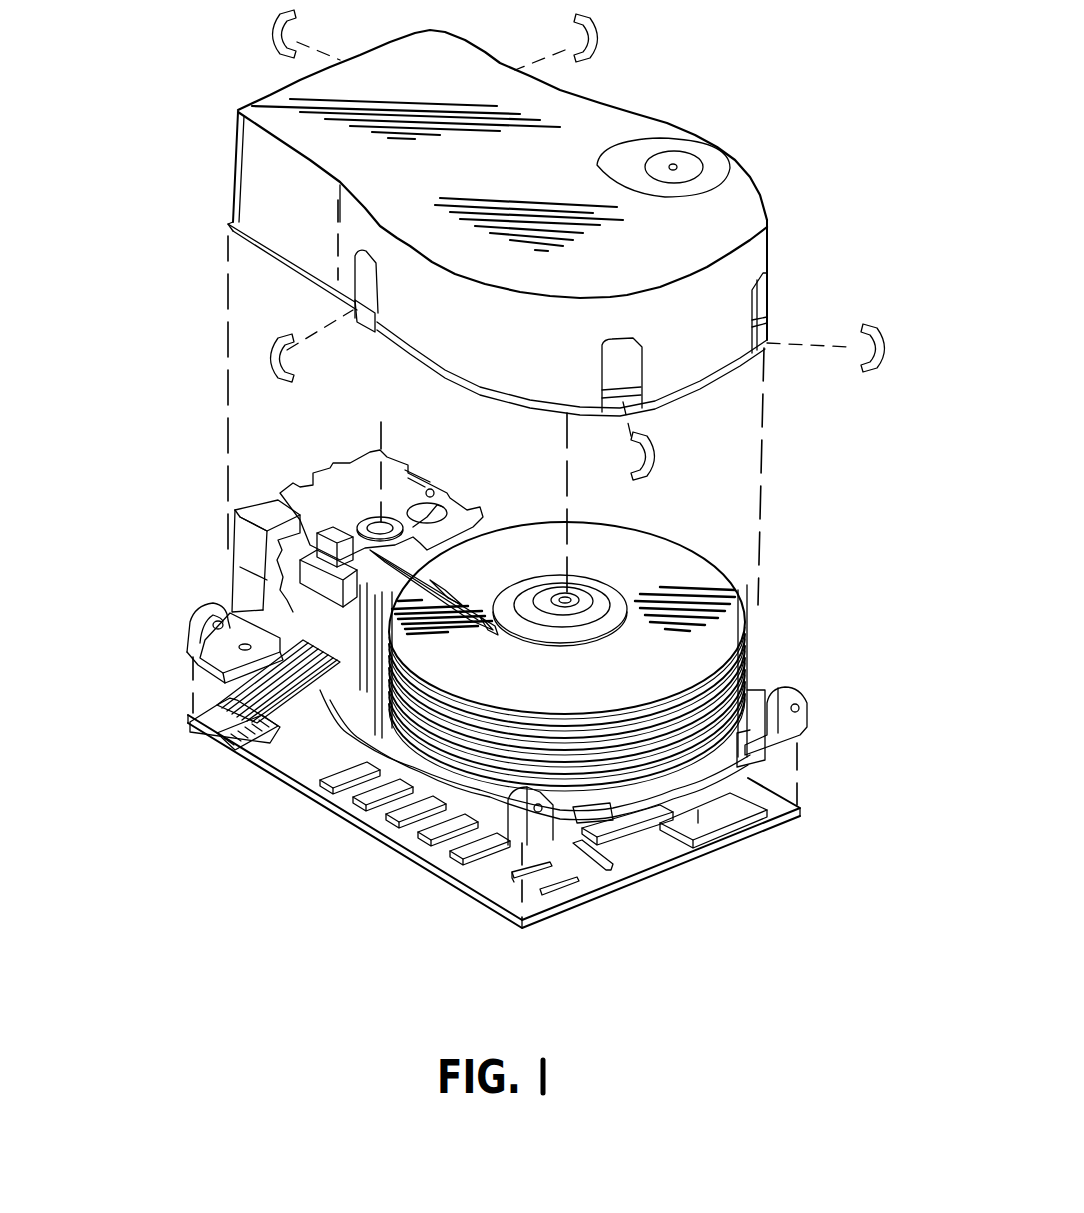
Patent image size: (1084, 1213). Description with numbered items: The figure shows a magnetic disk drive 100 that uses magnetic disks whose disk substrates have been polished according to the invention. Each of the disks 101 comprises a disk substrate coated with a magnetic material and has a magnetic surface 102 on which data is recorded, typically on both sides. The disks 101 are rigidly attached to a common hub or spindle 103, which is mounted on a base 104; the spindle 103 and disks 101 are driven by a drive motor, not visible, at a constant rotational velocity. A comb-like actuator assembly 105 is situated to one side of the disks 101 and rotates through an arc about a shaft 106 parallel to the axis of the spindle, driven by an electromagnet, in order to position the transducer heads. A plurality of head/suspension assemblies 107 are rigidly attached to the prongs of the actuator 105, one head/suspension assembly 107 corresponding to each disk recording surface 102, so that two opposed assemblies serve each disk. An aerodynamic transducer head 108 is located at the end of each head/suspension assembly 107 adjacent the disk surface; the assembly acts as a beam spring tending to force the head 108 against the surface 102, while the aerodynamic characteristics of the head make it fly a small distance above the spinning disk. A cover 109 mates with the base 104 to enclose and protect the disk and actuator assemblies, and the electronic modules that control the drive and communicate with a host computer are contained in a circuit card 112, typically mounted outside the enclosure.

The magnetic disk drive 100 is at (185, 402).
The disks 101 is at (762, 645).
The magnetic surface 102 is at (657, 560).
The hub or spindle 103 is at (570, 598).
The base 104 is at (810, 722).
The actuator assembly 105 is at (312, 530).
The shaft 106 is at (377, 523).
The head/suspension assembly 107 is at (487, 612).
The transducer head 108 is at (495, 633).
The cover 109 is at (760, 177).
The circuit card 112 is at (740, 840).